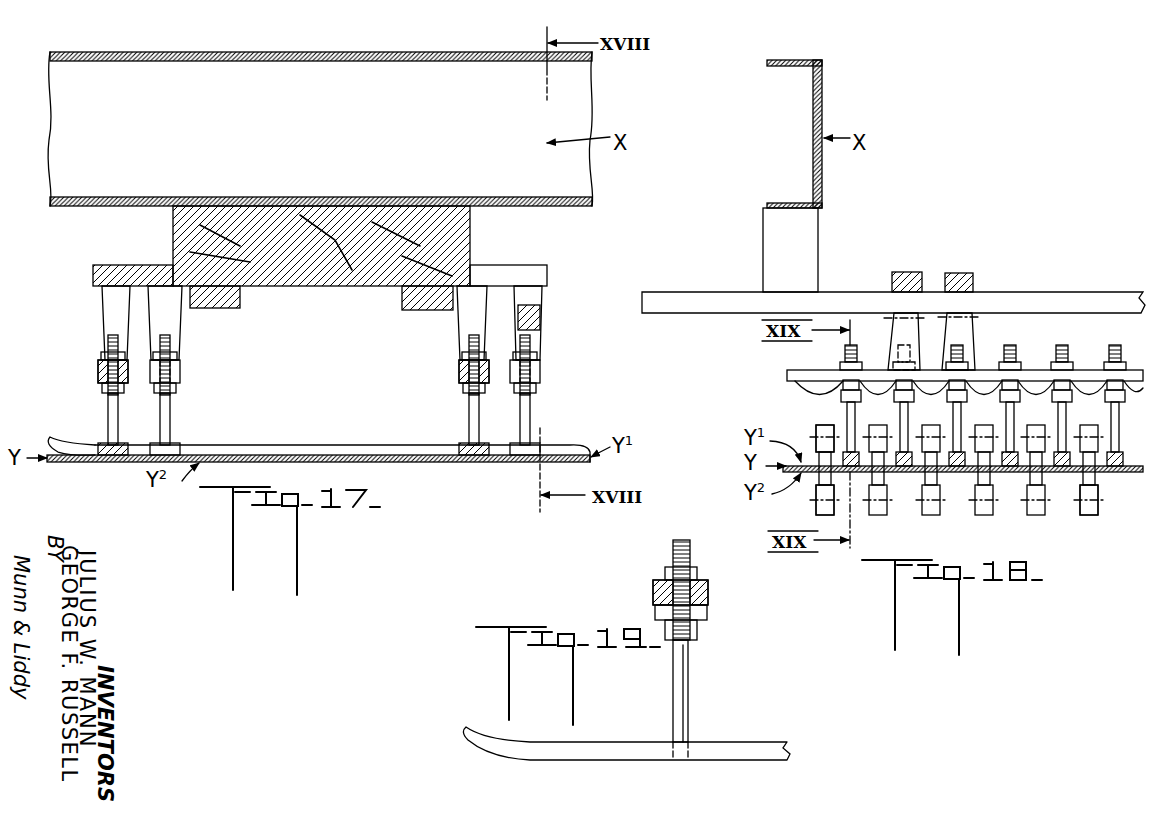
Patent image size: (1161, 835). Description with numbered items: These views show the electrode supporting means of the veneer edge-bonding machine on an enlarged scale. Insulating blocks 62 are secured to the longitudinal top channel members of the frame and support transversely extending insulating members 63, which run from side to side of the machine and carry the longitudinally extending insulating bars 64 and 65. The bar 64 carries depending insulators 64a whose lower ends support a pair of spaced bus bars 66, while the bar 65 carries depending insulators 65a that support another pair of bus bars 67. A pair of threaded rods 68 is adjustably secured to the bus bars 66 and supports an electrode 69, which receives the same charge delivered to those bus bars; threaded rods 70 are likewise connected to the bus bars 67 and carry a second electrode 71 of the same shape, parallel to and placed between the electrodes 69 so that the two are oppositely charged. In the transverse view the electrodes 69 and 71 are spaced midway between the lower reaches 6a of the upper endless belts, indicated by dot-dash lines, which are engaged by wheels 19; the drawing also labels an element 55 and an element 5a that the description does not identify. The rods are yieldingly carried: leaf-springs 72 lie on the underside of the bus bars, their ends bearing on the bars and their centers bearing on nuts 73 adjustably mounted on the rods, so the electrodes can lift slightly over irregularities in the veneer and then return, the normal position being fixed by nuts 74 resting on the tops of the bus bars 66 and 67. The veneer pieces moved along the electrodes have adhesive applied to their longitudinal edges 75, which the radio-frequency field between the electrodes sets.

In FIG. 17, the insulating blocks 62 is at (472, 238).
In FIG. 18, the insulating blocks 62 is at (772, 234).
In FIG. 17, the insulating members 63 is at (240, 303).
In FIG. 18, the insulating members 63 is at (713, 304).
In FIG. 17, the insulating bar 64 is at (93, 273).
In FIG. 18, the insulating bar 64 is at (903, 272).
In FIG. 17, the depending insulator 64a is at (108, 303).
In FIG. 18, the depending insulator 64a is at (897, 305).
In FIG. 18, the insulating bar 65 is at (960, 273).
In FIG. 17, the depending insulator 65a is at (182, 336).
In FIG. 18, the depending insulator 65a is at (973, 300).
In FIG. 17, the bus bars 66 is at (98, 368).
In FIG. 17, the bus bars 67 is at (180, 368).
In FIG. 18, the bus bars 67 is at (789, 372).
In FIG. 19, the bus bars 67 is at (708, 592).
In FIG. 17, the threaded rods 68 is at (108, 408).
In FIG. 18, the threaded rods 68 is at (845, 412).
In FIG. 17, the electrode 69 is at (74, 444).
In FIG. 18, the electrode 69 is at (955, 476).
In FIG. 17, the threaded rods 70 is at (170, 418).
In FIG. 18, the threaded rods 70 is at (900, 412).
In FIG. 19, the threaded rods 70 is at (690, 686).
In FIG. 18, the electrode 71 is at (904, 472).
In FIG. 19, the electrode 71 is at (770, 742).
In FIG. 17, the leaf-springs 72 is at (103, 381).
In FIG. 18, the leaf-springs 72 is at (814, 389).
In FIG. 19, the leaf-springs 72 is at (708, 612).
In FIG. 17, the nuts 73 is at (177, 388).
In FIG. 18, the nuts 73 is at (1118, 399).
In FIG. 19, the nuts 73 is at (697, 632).
In FIG. 17, the nuts 74 is at (100, 355).
In FIG. 18, the nuts 74 is at (1105, 368).
In FIG. 19, the nuts 74 is at (697, 573).
In FIG. 17, the longitudinal edges 75 is at (315, 462).
In FIG. 18, the wheels 19 is at (812, 425).
In FIG. 18, the guide roller 55 is at (815, 505).
In FIG. 18, the roller 5a is at (1092, 478).
In FIG. 18, the lower reaches 6a is at (1046, 455).